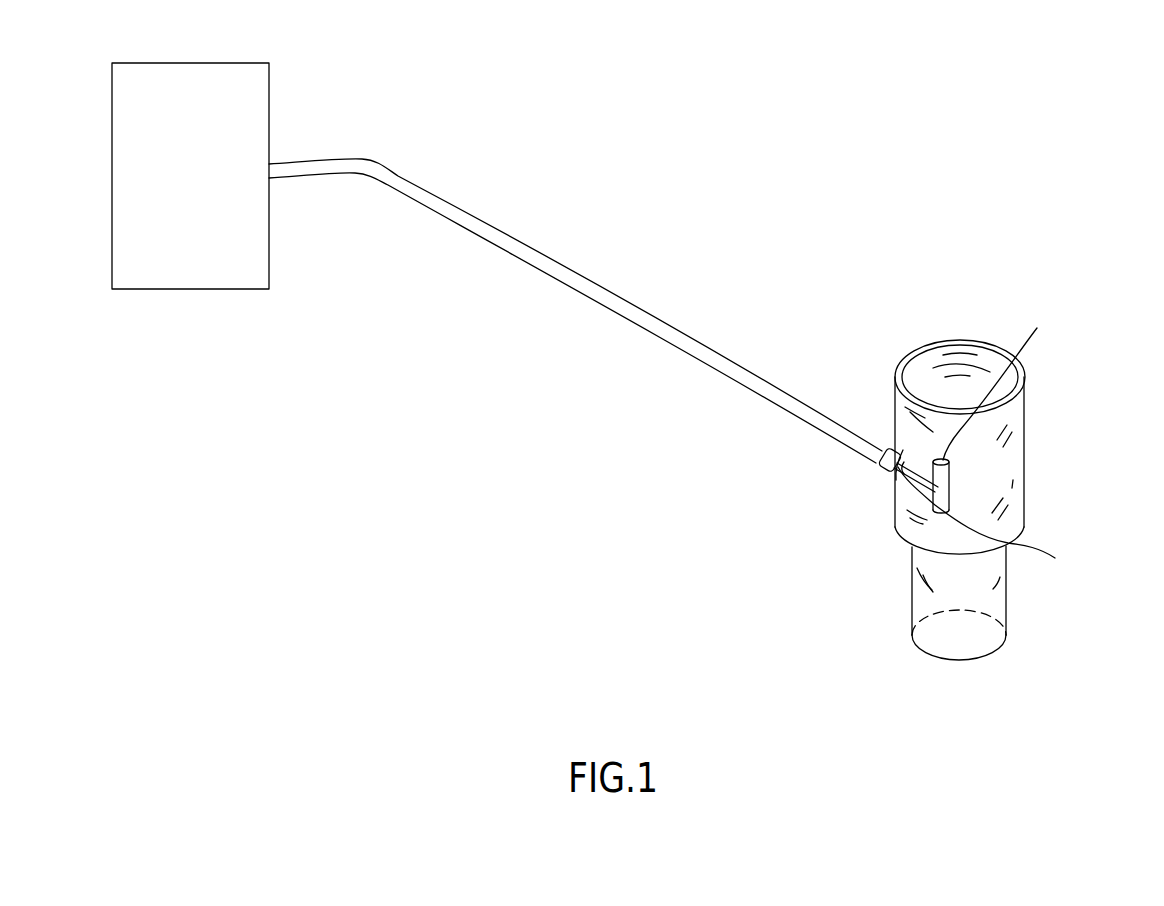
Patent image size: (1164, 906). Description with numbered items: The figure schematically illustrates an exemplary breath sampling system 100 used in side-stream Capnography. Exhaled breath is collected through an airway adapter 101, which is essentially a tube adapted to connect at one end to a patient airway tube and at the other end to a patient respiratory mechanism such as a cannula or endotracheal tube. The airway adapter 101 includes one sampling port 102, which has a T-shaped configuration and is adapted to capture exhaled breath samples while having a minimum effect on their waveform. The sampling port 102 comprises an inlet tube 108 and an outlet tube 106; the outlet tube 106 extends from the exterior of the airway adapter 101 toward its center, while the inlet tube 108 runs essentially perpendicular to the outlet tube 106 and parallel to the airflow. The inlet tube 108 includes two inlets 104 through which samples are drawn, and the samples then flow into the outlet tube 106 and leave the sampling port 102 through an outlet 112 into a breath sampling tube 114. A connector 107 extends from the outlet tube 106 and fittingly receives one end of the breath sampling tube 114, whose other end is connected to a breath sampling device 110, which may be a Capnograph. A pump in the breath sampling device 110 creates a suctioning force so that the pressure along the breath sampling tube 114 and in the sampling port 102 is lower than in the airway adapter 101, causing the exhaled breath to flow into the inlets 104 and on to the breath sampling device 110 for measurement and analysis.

The breath sampling system 100 is at (922, 84).
The airway adapter 101 is at (1024, 458).
The sampling port 102 is at (884, 483).
The inlets 104 is at (992, 445).
The outlet tube 106 is at (905, 482).
The connector 107 is at (903, 450).
The inlet tube 108 is at (950, 491).
The breath sampling device 110 is at (180, 63).
The outlet 112 is at (880, 452).
The breath sampling tube 114 is at (507, 238).